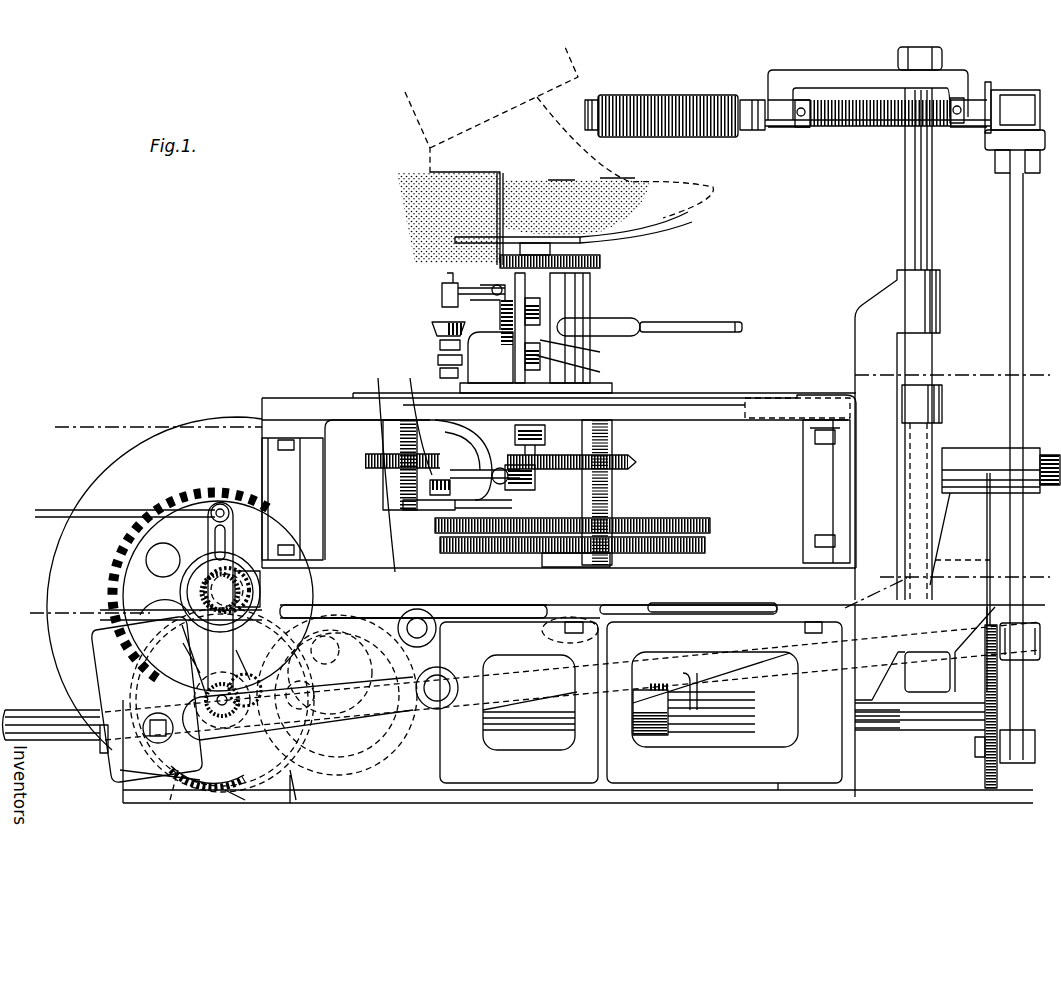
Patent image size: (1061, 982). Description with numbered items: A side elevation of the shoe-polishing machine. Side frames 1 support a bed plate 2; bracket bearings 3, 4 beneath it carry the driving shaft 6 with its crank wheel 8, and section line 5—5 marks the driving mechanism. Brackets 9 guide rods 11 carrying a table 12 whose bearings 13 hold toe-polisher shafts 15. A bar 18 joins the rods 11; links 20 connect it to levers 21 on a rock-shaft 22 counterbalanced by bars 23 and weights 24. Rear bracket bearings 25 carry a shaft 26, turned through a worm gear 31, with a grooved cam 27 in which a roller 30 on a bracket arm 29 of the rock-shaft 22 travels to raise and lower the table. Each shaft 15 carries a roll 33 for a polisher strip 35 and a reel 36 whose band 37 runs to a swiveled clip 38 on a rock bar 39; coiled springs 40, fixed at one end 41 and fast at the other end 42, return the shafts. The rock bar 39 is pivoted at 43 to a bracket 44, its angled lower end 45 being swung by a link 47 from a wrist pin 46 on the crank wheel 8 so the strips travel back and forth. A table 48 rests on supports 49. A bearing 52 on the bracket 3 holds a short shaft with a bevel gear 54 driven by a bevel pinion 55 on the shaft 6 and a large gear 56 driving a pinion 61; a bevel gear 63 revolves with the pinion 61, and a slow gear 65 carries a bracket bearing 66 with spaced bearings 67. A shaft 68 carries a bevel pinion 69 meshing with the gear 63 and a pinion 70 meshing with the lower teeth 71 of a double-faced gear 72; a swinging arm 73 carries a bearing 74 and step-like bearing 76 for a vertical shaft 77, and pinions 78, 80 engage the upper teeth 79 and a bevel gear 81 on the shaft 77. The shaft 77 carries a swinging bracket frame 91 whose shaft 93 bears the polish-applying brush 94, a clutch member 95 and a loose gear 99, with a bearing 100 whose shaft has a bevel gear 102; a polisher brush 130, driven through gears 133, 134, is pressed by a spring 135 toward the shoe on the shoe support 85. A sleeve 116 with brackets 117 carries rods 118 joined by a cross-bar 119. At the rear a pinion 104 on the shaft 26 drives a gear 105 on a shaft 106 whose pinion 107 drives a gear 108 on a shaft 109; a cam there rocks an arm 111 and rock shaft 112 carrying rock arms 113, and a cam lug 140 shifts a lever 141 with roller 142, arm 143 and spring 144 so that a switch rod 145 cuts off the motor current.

The vertical side frames 1 is at (625, 782).
The bed plate 2 is at (559, 496).
The bracket bearing 3 is at (928, 718).
The bracket bearing 4 is at (540, 405).
The section line 5— 5 is at (530, 598).
The main horizontal driving shaft 6 is at (28, 712).
The circular crank wheel 8 is at (985, 772).
The vertical brackets 9 is at (908, 280).
The rods 11 is at (905, 192).
The plate or table 12 is at (830, 72).
The bearing 13 is at (960, 125).
The toe-polisher shaft 15 is at (838, 125).
The bar 18 is at (902, 408).
The links 20 is at (910, 515).
The levers 21 is at (740, 650).
The rock-shaft 22 is at (437, 688).
The rearwardly-extending bars 23 is at (100, 745).
The weight 24 is at (147, 699).
The bracket bearings 25 is at (248, 560).
The horizontal shaft 26 is at (200, 590).
The large cam 27 is at (154, 583).
The bracket arm 29 is at (395, 755).
The roller 30 is at (198, 799).
The worm gear 31 is at (125, 550).
The roll 33 is at (592, 100).
The flexible band or fabric strip 35 is at (675, 95).
The pulley or reel 36 is at (988, 82).
The band 37 is at (1012, 92).
The swiveled clips 38 is at (990, 150).
The rock bar or lever 39 is at (1010, 262).
The coiled springs 40 is at (885, 125).
The spring end 41 is at (958, 98).
The spring end 42 is at (805, 124).
The pivot 43 is at (1025, 460).
The bracket 44 is at (960, 549).
The lower end of rock bar 45 is at (1020, 550).
The wrist pin 46 is at (1022, 765).
The link 47 is at (1020, 678).
The horizontal plate or table 48 is at (772, 405).
The supports 49 is at (556, 491).
The vertical bearing 52 is at (529, 702).
The bevel gear 54 is at (645, 690).
The bevel pinion 55 is at (662, 740).
The large gear 56 is at (705, 546).
The pinion 61 is at (585, 548).
The horizontal bevel gear 63 is at (630, 462).
The horizontal gear 65 is at (685, 515).
The bracket bearing 66 is at (455, 500).
The vertically spaced-apart bearings 67 is at (378, 400).
The horizontal shaft 68 is at (485, 491).
The beveled pinion 69 is at (530, 495).
The pinion 70 is at (430, 480).
The lower teeth 71 is at (372, 470).
The double-faced gear 72 is at (365, 462).
The arm or bracket 73 is at (432, 490).
The horizontal bearing 74 is at (482, 430).
The step-like bearing 76 is at (540, 478).
The vertical shaft 77 is at (548, 432).
The pinion 78 is at (410, 378).
The upper teeth 79 is at (365, 450).
The pinion 80 is at (548, 452).
The bevel gear 81 is at (593, 403).
The foot or shoe support 85 is at (675, 225).
The swinging bracket frame 91 is at (442, 290).
The vertical shaft 93 is at (442, 305).
The polish-applying brush 94 is at (405, 208).
The clutch member 95 is at (440, 345).
The horizontal gear 99 is at (432, 328).
The horizontal bearing 100 is at (486, 315).
The beveled gear 102 is at (495, 290).
The pinion 104 is at (262, 590).
The gear 105 is at (176, 663).
The horizontal shaft 106 is at (205, 702).
The pinion 107 is at (233, 678).
The gear 108 is at (222, 688).
The horizontal shaft 109 is at (251, 700).
The arm 111 is at (343, 618).
The rock shaft 112 is at (410, 620).
The rock arms 113 is at (478, 618).
The sleeve 116 is at (592, 300).
The side supports or brackets 117 is at (628, 302).
The reciprocable horizontal rods 118 is at (700, 321).
The cross-bar 119 is at (592, 350).
The polisher brush 130 is at (540, 178).
The gear 133 is at (519, 248).
The gear 134 is at (600, 262).
The coiled spring 135 is at (587, 369).
The lug 140 is at (298, 708).
The lever 141 is at (220, 500).
The roller 142 is at (301, 801).
The arm 143 is at (130, 780).
The spring 144 is at (230, 780).
The switch rod 145 is at (108, 505).